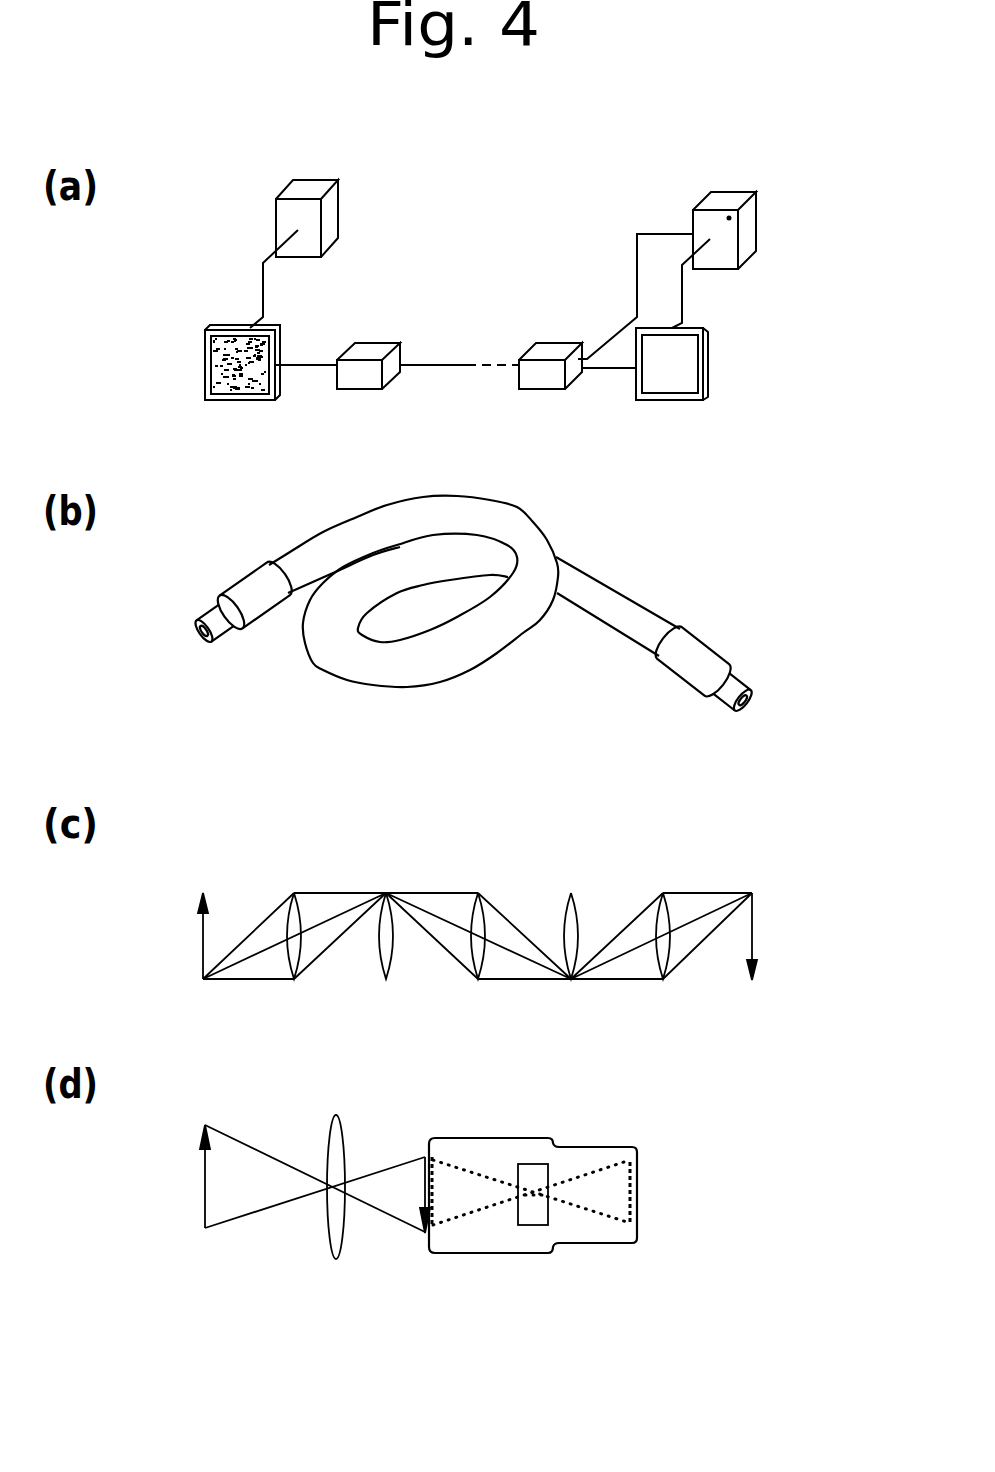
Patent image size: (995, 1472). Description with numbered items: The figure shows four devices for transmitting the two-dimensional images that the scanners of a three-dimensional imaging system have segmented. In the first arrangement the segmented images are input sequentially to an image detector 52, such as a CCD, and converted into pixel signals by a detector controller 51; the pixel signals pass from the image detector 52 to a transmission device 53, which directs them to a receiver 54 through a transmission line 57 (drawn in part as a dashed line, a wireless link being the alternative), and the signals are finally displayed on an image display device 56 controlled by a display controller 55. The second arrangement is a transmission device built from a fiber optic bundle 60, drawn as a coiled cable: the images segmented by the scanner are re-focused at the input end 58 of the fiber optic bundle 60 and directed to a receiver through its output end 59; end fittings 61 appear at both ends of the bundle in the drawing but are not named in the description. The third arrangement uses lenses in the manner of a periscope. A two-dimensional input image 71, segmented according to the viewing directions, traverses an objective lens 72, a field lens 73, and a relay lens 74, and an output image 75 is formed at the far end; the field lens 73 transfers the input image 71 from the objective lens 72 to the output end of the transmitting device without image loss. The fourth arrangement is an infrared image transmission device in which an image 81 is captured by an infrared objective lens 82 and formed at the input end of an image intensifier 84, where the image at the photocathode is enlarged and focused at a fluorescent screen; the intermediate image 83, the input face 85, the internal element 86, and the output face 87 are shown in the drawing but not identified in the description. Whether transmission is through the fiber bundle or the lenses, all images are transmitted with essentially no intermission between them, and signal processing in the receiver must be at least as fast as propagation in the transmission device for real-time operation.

The detector controller 51 is at (337, 197).
The image detector 52 is at (283, 340).
The transmission device 53 is at (380, 343).
The receiver 54 is at (560, 343).
The display controller 55 is at (754, 207).
The image display device 56 is at (713, 350).
The transmission line 57 is at (453, 362).
The input end 58 is at (213, 643).
The output end 59 is at (753, 687).
The fiber optic bundle 60 is at (525, 508).
The ferrule 61 is at (250, 572).
The input image 71 is at (203, 887).
The objective lens 72 is at (294, 893).
The field lens 73 is at (571, 893).
The relay lens 74 is at (663, 979).
The output image 75 is at (752, 894).
The image 81 is at (205, 1187).
The infrared objective lens 82 is at (343, 1135).
The image 83 is at (422, 1190).
The image intensifier 84 is at (497, 1138).
The input face 85 is at (443, 1223).
The lens element 86 is at (532, 1223).
The output face 87 is at (633, 1157).